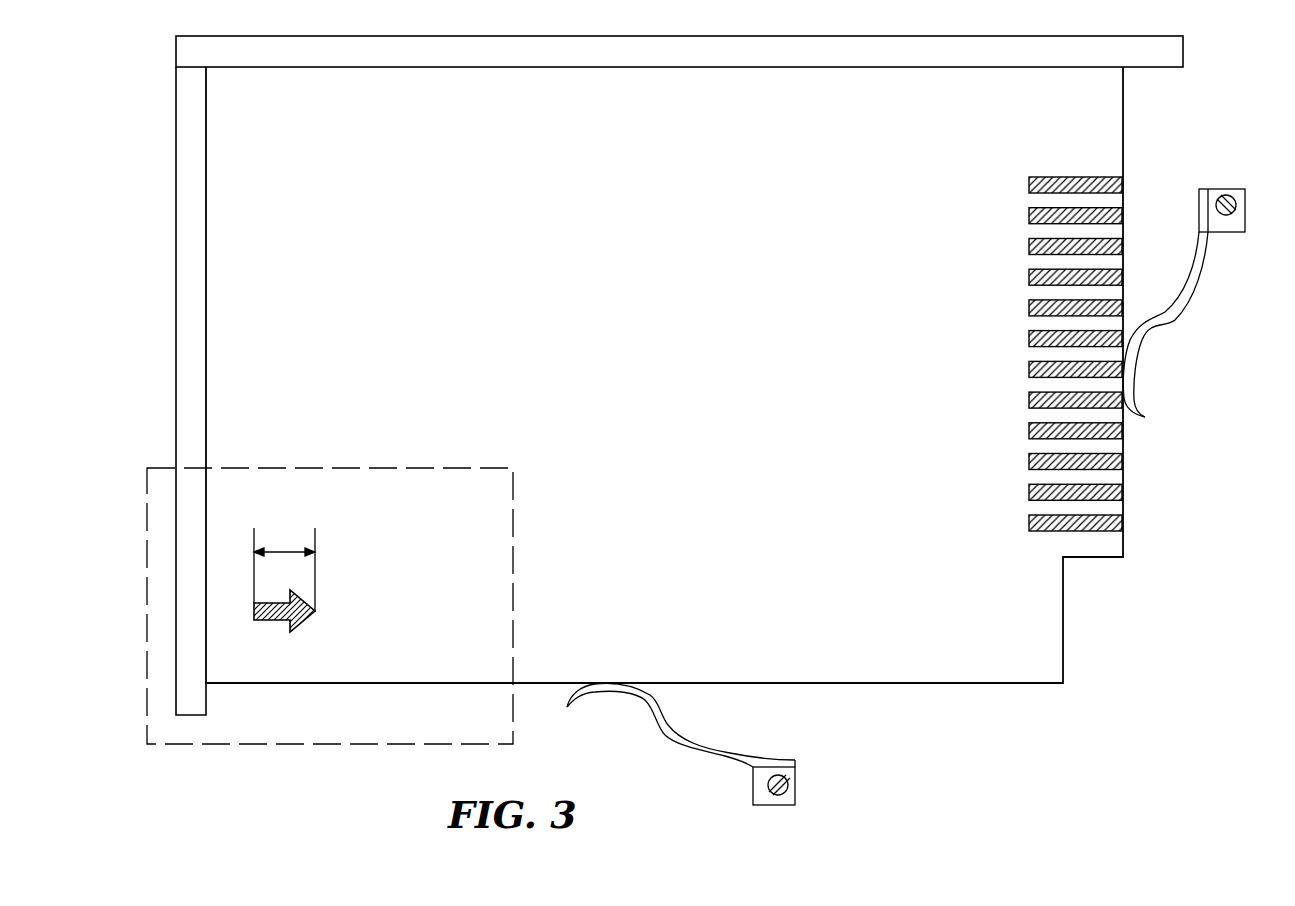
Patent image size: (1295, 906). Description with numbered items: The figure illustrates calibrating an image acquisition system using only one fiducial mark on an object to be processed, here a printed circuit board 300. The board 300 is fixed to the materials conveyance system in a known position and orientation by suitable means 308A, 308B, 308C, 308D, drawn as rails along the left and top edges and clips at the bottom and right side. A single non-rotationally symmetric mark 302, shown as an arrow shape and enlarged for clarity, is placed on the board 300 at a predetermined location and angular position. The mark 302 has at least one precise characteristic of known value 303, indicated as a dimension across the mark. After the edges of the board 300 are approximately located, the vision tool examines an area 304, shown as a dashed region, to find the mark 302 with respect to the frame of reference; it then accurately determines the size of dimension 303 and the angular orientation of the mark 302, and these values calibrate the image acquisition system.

The printed circuit board 300 is at (1078, 112).
The non-rotationally symmetric mark 302 is at (307, 615).
The characteristic of known value 303 is at (284, 548).
The area 304 is at (435, 466).
The means for fixing the board 308A is at (192, 300).
The means for fixing the board 308B is at (222, 56).
The means for fixing the board 308C is at (680, 747).
The means for fixing the board 308D is at (1193, 297).